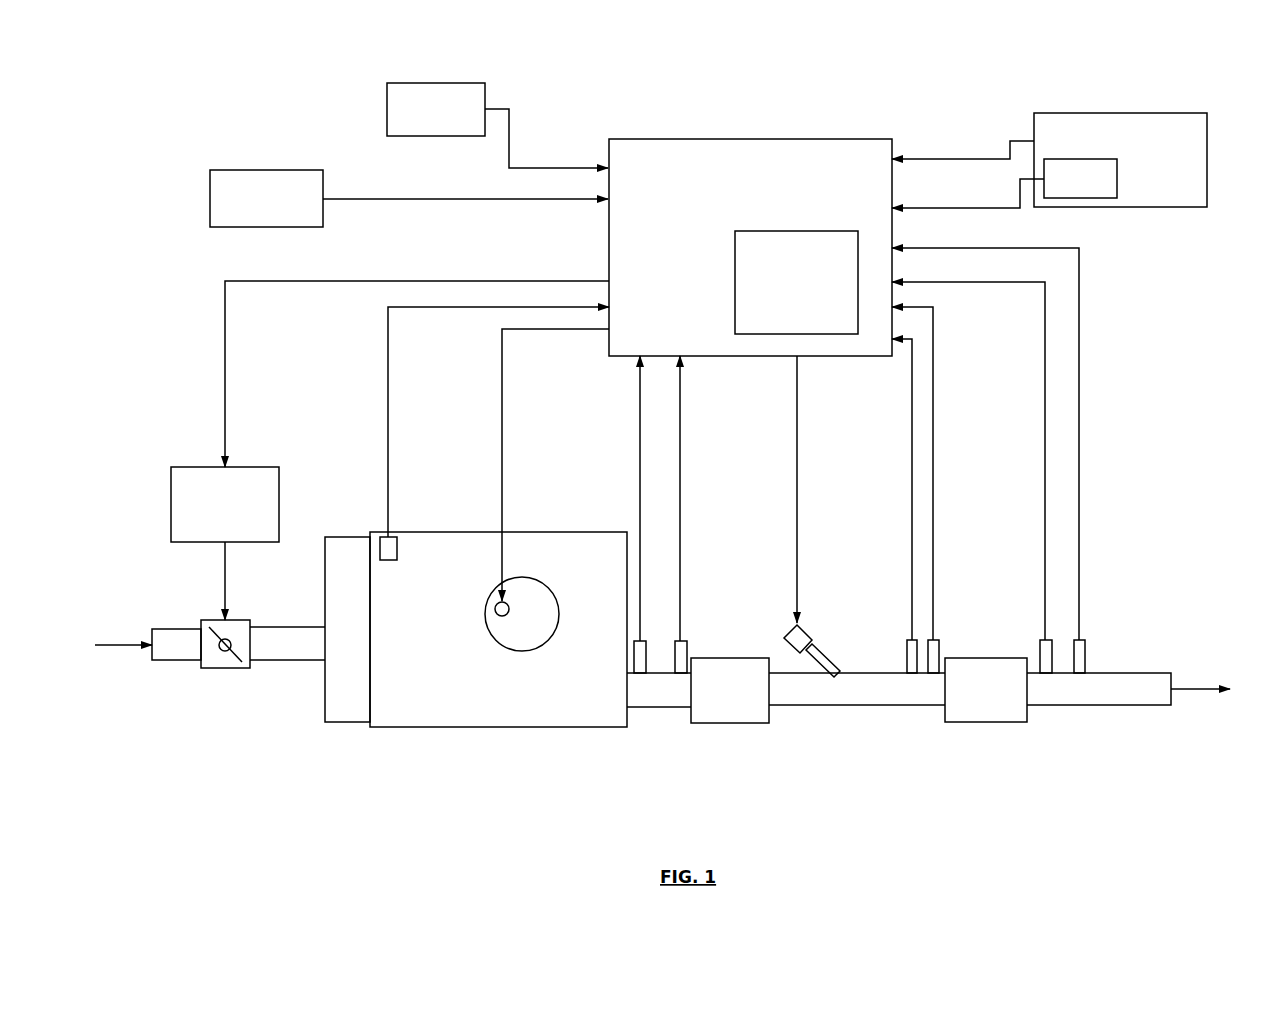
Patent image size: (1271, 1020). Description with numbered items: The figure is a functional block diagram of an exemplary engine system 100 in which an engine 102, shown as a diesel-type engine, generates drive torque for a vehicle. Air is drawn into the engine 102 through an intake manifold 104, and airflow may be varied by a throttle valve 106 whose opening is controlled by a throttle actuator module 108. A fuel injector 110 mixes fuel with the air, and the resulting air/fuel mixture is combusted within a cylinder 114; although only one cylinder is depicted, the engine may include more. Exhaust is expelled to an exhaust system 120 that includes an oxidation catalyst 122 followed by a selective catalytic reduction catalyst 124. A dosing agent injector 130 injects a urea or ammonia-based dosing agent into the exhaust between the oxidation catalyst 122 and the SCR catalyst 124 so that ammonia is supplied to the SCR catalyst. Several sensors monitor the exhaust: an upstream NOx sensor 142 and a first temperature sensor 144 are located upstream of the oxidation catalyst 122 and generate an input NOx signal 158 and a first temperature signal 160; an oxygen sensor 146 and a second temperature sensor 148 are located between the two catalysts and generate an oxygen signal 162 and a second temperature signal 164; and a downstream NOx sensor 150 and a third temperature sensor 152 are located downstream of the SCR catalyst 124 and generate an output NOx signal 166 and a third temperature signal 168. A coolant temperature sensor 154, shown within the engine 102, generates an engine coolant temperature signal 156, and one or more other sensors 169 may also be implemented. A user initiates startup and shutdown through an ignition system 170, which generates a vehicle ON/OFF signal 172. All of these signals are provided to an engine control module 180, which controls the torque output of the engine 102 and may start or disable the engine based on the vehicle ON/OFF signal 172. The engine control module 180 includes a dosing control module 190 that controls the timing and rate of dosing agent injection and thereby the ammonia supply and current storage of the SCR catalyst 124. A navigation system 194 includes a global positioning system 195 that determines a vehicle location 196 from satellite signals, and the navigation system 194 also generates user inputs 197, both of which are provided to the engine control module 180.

The engine system 100 is at (192, 86).
The engine 102 is at (470, 531).
The intake manifold 104 is at (340, 537).
The throttle valve 106 is at (225, 668).
The throttle actuator module 108 is at (196, 467).
The fuel injector 110 is at (495, 607).
The cylinder 114 is at (522, 651).
The exhaust system 120 is at (1018, 818).
The oxidation catalyst 122 is at (739, 658).
The selective catalytic reduction catalyst 124 is at (1000, 722).
The dosing agent injector 130 is at (795, 627).
The upstream NOx sensor 142 is at (640, 676).
The first temperature sensor 144 is at (681, 676).
The oxygen sensor 146 is at (912, 676).
The second temperature sensor 148 is at (933, 676).
The downstream NOx sensor 150 is at (1040, 643).
The third temperature sensor 152 is at (1079, 676).
The coolant temperature sensor 154 is at (397, 548).
The engine coolant temperature signal 156 is at (388, 393).
The input NOx signal 158 is at (640, 463).
The first temperature signal 160 is at (680, 463).
The oxygen signal 162 is at (912, 428).
The second temperature signal 164 is at (933, 428).
The output NOx signal 166 is at (1045, 448).
The third temperature signal 168 is at (1079, 448).
The other sensors 169 is at (275, 170).
The ignition system 170 is at (445, 83).
The vehicle ON/OFF signal 172 is at (505, 165).
The engine control module 180 is at (748, 139).
The dosing control module 190 is at (822, 231).
The navigation system 194 is at (1123, 113).
The global positioning system 195 is at (1117, 180).
The vehicle location 196 is at (985, 208).
The user inputs 197 is at (1012, 141).